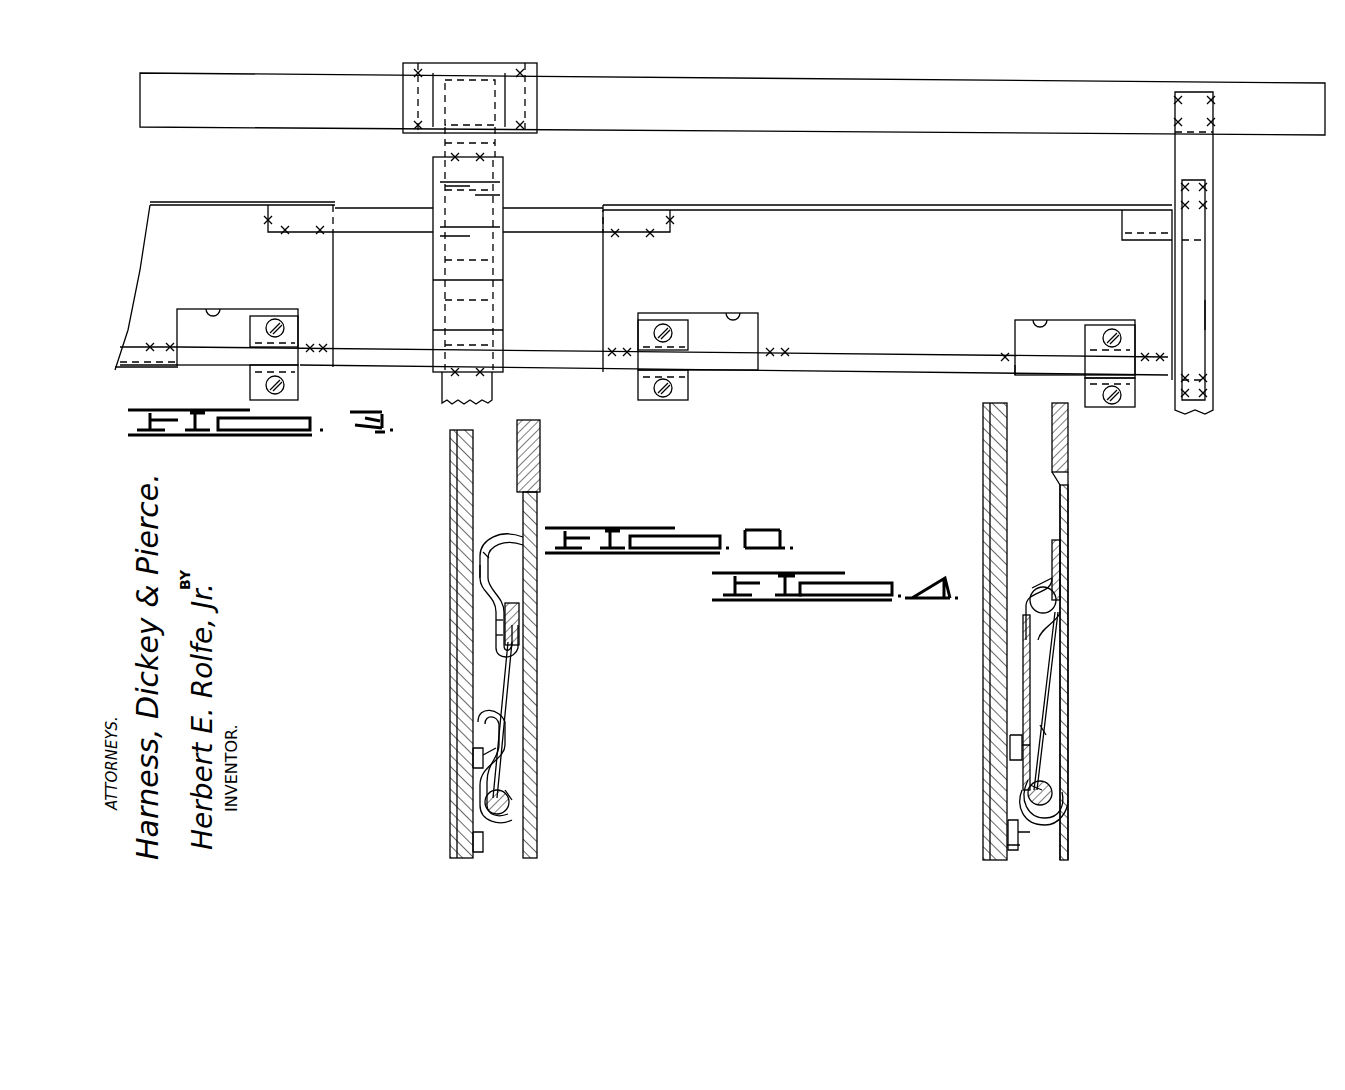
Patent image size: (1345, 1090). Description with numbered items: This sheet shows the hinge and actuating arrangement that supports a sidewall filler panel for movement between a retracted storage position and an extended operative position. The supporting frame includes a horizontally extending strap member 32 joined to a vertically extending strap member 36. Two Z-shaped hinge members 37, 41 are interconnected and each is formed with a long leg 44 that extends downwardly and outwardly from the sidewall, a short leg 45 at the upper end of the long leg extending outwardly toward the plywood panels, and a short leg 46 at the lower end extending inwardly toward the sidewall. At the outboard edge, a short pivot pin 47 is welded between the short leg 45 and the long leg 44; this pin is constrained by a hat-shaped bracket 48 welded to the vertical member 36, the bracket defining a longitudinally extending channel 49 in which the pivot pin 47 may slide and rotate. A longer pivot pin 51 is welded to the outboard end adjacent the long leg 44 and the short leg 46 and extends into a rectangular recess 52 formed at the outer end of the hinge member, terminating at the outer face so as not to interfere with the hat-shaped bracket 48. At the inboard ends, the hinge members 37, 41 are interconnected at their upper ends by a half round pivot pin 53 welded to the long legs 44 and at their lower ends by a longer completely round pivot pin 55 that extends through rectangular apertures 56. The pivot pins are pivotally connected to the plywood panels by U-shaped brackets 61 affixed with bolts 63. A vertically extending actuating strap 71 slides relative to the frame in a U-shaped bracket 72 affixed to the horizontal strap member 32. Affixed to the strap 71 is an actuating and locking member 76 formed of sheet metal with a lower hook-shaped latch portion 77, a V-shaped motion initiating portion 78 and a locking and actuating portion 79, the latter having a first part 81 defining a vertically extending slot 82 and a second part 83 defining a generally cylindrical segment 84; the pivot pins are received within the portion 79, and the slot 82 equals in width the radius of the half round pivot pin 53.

In FIG. 3, the horizontally extending strap member 32 is at (1243, 103).
In FIG. 9, the horizontally extending strap member 32 is at (541, 440).
In FIG. 4, the horizontally extending strap member 32 is at (1069, 438).
In FIG. 3, the vertically extending strap member 36 is at (1215, 160).
In FIG. 4, the vertically extending strap member 36 is at (1068, 490).
In FIG. 3, the hinge member 37 is at (207, 226).
In FIG. 9, the hinge member 37 is at (493, 694).
In FIG. 3, the hinge member 41 is at (892, 236).
In FIG. 4, the hinge member 41 is at (1049, 677).
In FIG. 4, the long leg 44 is at (1052, 635).
In FIG. 4, the short leg 45 is at (1040, 585).
In FIG. 4, the short leg 46 is at (1048, 830).
In FIG. 3, the short pivot pin 47 is at (1200, 240).
In FIG. 4, the short pivot pin 47 is at (1048, 600).
In FIG. 3, the hat-shaped bracket 48 is at (1208, 310).
In FIG. 4, the hat-shaped bracket 48 is at (1060, 548).
In FIG. 4, the longitudinally extending channel 49 is at (1045, 735).
In FIG. 3, the longer pivot pin 51 is at (1032, 380).
In FIG. 4, the longer pivot pin 51 is at (1052, 793).
In FIG. 3, the rectangular recess 52 is at (1043, 323).
In FIG. 3, the half round pivot pin 53 is at (538, 218).
In FIG. 9, the half round pivot pin 53 is at (520, 625).
In FIG. 3, the round pivot pin 55 is at (519, 355).
In FIG. 9, the round pivot pin 55 is at (510, 800).
In FIG. 3, the rectangular aperture 56 is at (218, 312).
In FIG. 3, the U-shaped bracket 61 is at (298, 384).
In FIG. 9, the U-shaped bracket 61 is at (507, 790).
In FIG. 4, the U-shaped bracket 61 is at (1045, 775).
In FIG. 9, the bolt 63 is at (485, 750).
In FIG. 4, the bolt 63 is at (1020, 740).
In FIG. 3, the actuating strap 71 is at (485, 143).
In FIG. 9, the actuating strap 71 is at (540, 520).
In FIG. 3, the U-shaped bracket 72 is at (531, 70).
In FIG. 3, the actuating and locking member 76 is at (413, 178).
In FIG. 9, the actuating and locking member 76 is at (487, 615).
In FIG. 9, the hook-shaped latch portion 77 is at (483, 800).
In FIG. 9, the V-shaped motion initiating portion 78 is at (482, 730).
In FIG. 9, the locking and actuating portion 79 is at (485, 575).
In FIG. 9, the first part 81 is at (498, 630).
In FIG. 9, the vertically extending slot 82 is at (505, 608).
In FIG. 9, the second part 83 is at (487, 552).
In FIG. 9, the cylindrical segment 84 is at (500, 570).